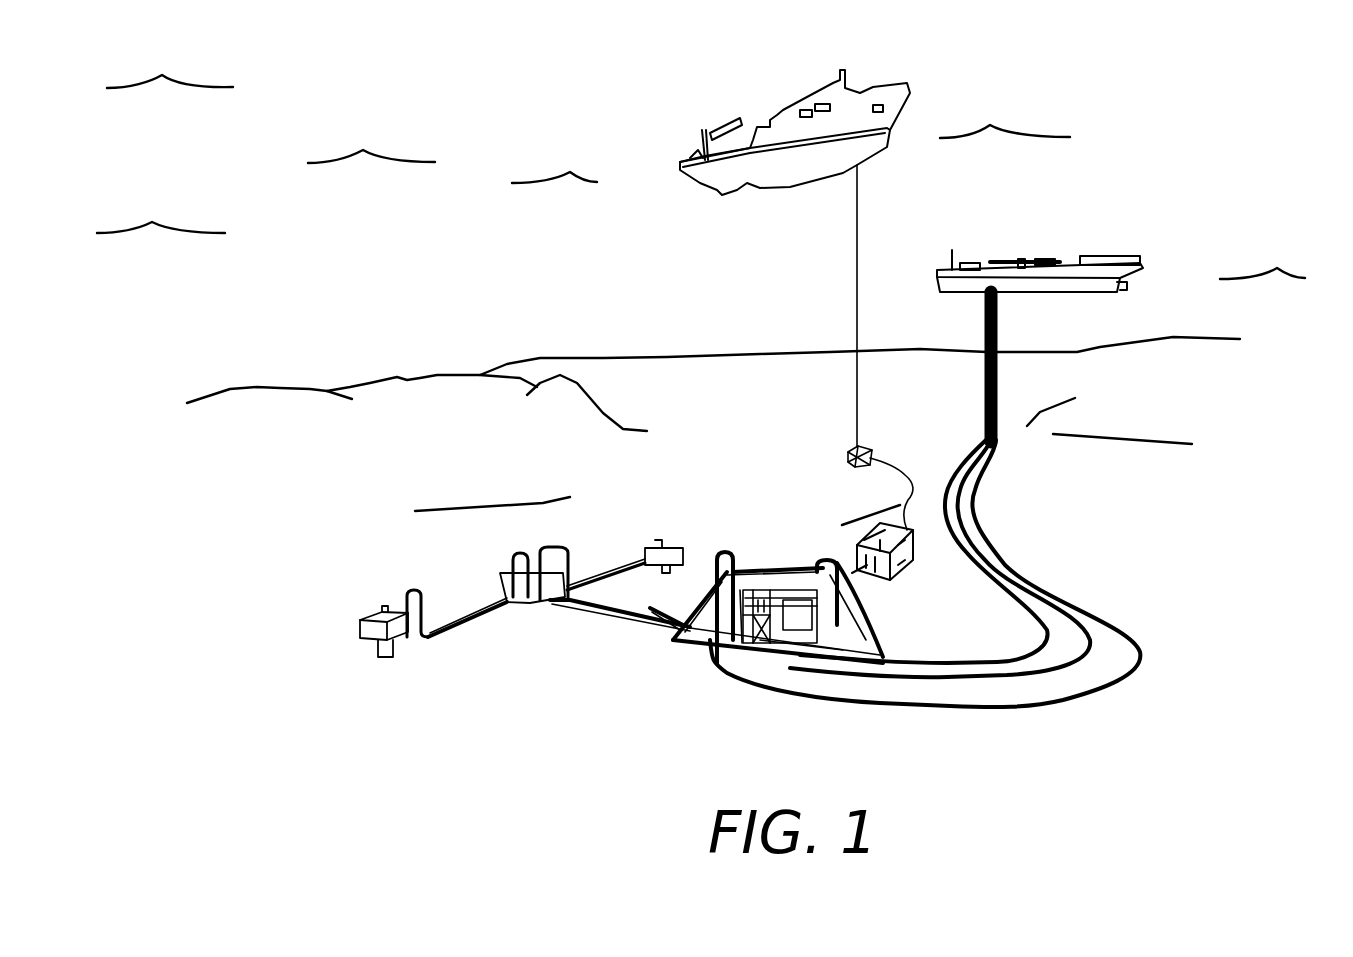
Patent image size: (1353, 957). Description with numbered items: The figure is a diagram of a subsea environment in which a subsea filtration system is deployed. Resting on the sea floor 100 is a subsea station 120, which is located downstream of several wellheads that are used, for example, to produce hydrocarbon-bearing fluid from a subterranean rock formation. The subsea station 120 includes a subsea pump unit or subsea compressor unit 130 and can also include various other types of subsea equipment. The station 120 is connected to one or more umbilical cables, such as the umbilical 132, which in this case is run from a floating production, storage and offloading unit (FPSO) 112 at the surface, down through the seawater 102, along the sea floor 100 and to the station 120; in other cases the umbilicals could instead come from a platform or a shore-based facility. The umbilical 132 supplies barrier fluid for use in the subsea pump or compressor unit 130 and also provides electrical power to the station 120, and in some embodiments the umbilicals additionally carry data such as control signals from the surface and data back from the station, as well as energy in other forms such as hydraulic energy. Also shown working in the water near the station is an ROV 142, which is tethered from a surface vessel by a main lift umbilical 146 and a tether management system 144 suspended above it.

The sea floor 100 is at (1146, 534).
The seawater 102 is at (750, 334).
The floating production, storage and offloading unit (FPSO) 112 is at (1147, 263).
The subsea station 120 is at (767, 544).
The subsea pump unit or subsea compressor unit 130 is at (732, 643).
The umbilical 132 is at (970, 711).
The ROV 142 is at (913, 557).
The tether management system 144 is at (870, 453).
The main lift umbilical 146 is at (860, 213).